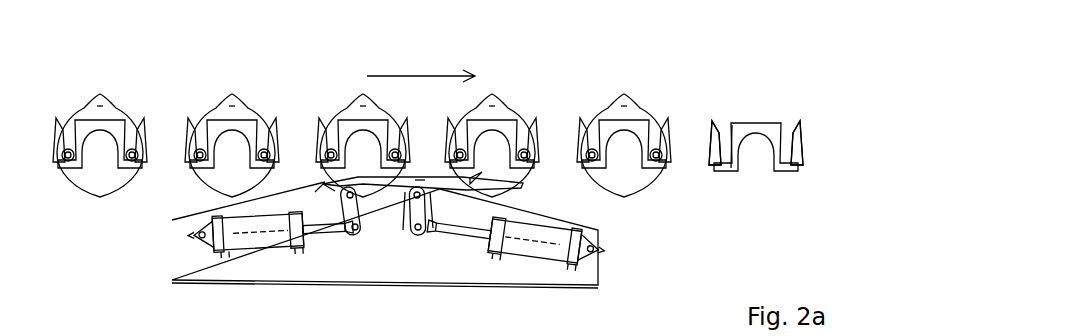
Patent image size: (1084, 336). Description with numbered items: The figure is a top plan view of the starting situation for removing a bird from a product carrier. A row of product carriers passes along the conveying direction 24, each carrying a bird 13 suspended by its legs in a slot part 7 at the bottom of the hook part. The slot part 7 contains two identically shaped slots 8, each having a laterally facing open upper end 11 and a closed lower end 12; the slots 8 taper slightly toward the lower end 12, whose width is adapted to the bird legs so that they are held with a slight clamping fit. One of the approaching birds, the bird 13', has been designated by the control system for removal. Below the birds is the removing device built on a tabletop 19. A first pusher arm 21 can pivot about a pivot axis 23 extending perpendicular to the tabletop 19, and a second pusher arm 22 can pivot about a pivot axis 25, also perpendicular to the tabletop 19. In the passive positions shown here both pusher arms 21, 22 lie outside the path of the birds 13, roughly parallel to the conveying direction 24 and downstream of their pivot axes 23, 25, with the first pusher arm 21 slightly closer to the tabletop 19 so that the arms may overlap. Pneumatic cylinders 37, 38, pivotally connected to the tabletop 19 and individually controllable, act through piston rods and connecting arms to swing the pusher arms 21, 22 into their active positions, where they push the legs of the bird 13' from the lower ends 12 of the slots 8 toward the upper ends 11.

The slot part 7 is at (777, 79).
The slots 8 is at (788, 134).
The upper end 11 is at (727, 135).
The lower end 12 is at (725, 157).
The bird 13 is at (103, 127).
The bird 13' is at (356, 126).
The tabletop 19 is at (348, 268).
The first pusher arm 21 is at (423, 174).
The second pusher arm 22 is at (476, 178).
The pivot axis 23 is at (340, 189).
The conveying direction 24 is at (409, 76).
The pivot axis 25 is at (413, 203).
The pneumatic cylinder 37 is at (261, 240).
The pneumatic cylinder 38 is at (540, 250).